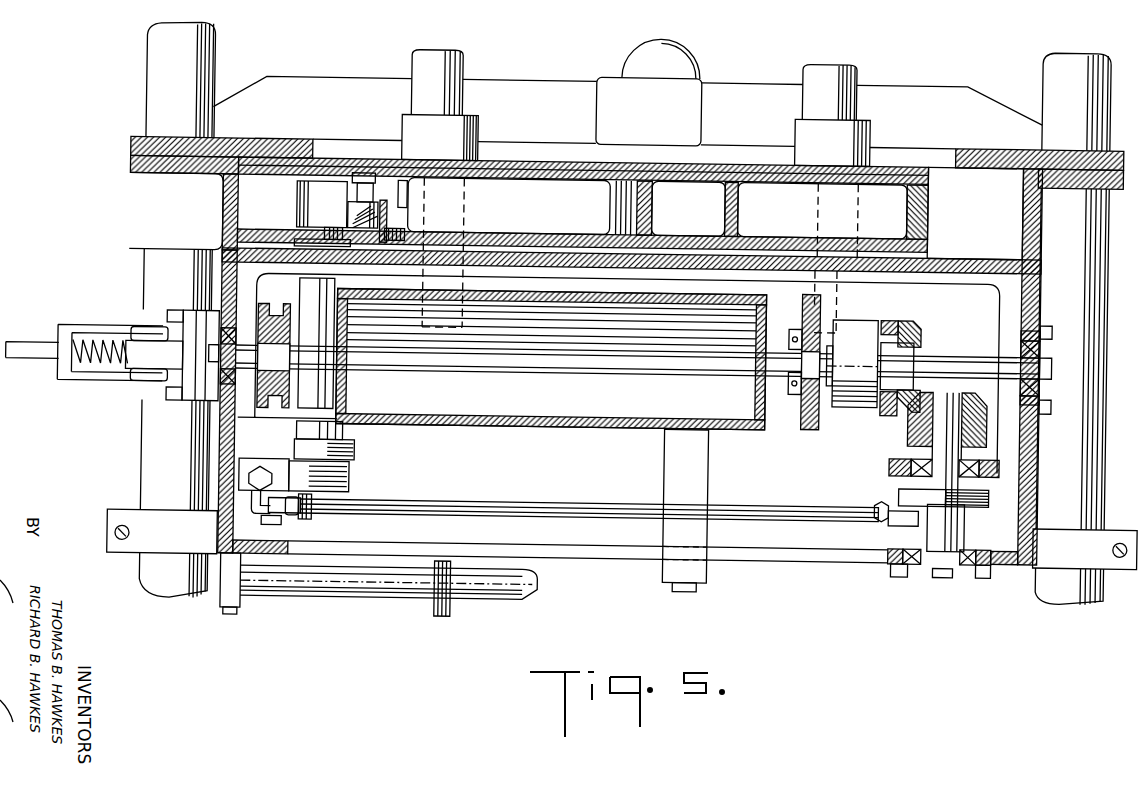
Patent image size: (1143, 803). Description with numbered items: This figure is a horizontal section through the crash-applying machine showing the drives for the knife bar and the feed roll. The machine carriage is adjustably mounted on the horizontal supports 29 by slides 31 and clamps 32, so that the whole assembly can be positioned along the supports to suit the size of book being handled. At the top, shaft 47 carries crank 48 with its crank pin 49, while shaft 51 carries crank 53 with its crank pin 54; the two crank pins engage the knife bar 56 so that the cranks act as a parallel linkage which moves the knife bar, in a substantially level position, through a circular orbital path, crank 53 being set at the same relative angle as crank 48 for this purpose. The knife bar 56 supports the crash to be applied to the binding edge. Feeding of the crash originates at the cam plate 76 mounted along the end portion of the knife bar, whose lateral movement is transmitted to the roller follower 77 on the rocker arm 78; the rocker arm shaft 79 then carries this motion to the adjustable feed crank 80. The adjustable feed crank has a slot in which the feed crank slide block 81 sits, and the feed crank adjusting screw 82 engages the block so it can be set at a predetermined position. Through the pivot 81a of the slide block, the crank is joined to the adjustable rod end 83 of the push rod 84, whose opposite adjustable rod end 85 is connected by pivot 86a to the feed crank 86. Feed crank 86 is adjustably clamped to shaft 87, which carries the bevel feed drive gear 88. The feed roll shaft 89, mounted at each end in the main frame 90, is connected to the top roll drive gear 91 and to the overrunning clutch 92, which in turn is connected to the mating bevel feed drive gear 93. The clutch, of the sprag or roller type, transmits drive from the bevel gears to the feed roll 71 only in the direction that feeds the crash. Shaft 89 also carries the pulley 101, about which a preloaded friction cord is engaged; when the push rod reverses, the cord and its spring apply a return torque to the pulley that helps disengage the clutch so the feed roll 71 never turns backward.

The horizontal supports 29 is at (147, 66).
The slides 31 is at (145, 220).
The clamps 32 is at (121, 555).
The shaft 47 is at (420, 60).
The crank 48 is at (400, 120).
The crank pin 49 is at (465, 196).
The shaft 51 is at (810, 70).
The crank 53 is at (796, 122).
The crank pin 54 is at (826, 202).
The knife bar 56 is at (577, 176).
The feed roll 71 is at (553, 422).
The cam plate 76 is at (390, 214).
The roller follower 77 is at (372, 228).
The rocker arm 78 is at (342, 197).
The rocker arm shaft 79 is at (335, 331).
The adjustable feed crank 80 is at (352, 470).
The feed crank slide block 81 is at (292, 484).
The pivot 81a is at (266, 523).
The feed crank adjusting screw 82 is at (263, 466).
The adjustable rod end 83 is at (300, 514).
The push rod 84 is at (376, 512).
The adjustable rod end 85 is at (881, 513).
The feed crank 86 is at (905, 486).
The pivot 86a is at (905, 518).
The shaft 87 is at (966, 530).
The bevel feed drive gear 88 is at (920, 410).
The feed roll shaft 89 is at (586, 368).
The main frame 90 is at (247, 250).
The top roll drive gear 91 is at (803, 420).
The overrunning clutch 92 is at (853, 405).
The bevel feed drive gear 93 is at (914, 328).
The pulley 101 is at (275, 310).